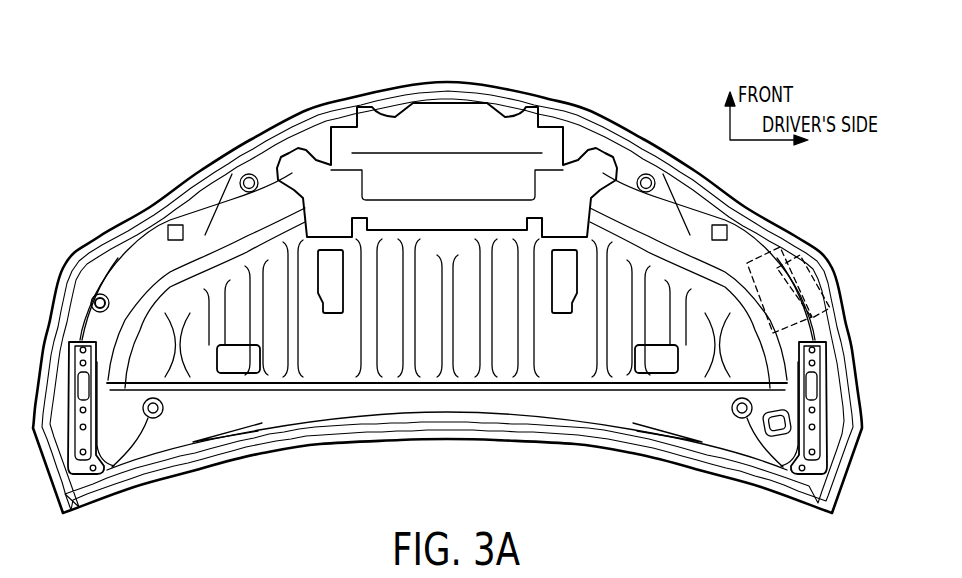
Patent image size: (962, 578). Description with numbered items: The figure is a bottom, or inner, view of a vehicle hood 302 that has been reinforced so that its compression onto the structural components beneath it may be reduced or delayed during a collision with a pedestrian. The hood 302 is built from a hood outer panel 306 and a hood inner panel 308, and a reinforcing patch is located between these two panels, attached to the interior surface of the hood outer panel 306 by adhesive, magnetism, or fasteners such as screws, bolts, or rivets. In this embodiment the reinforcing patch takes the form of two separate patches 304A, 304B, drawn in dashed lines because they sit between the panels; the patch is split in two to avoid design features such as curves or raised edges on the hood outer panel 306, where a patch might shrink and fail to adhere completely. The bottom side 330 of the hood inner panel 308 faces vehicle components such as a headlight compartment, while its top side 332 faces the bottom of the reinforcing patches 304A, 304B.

The hood 302 is at (184, 146).
The reinforcing patch 304A is at (806, 253).
The reinforcing patch 304B is at (838, 284).
The hood outer panel 306 is at (103, 242).
The hood inner panel 308 is at (78, 300).
The bottom side of the hood inner panel 330 is at (456, 142).
The top side of the hood inner panel 332 is at (553, 98).